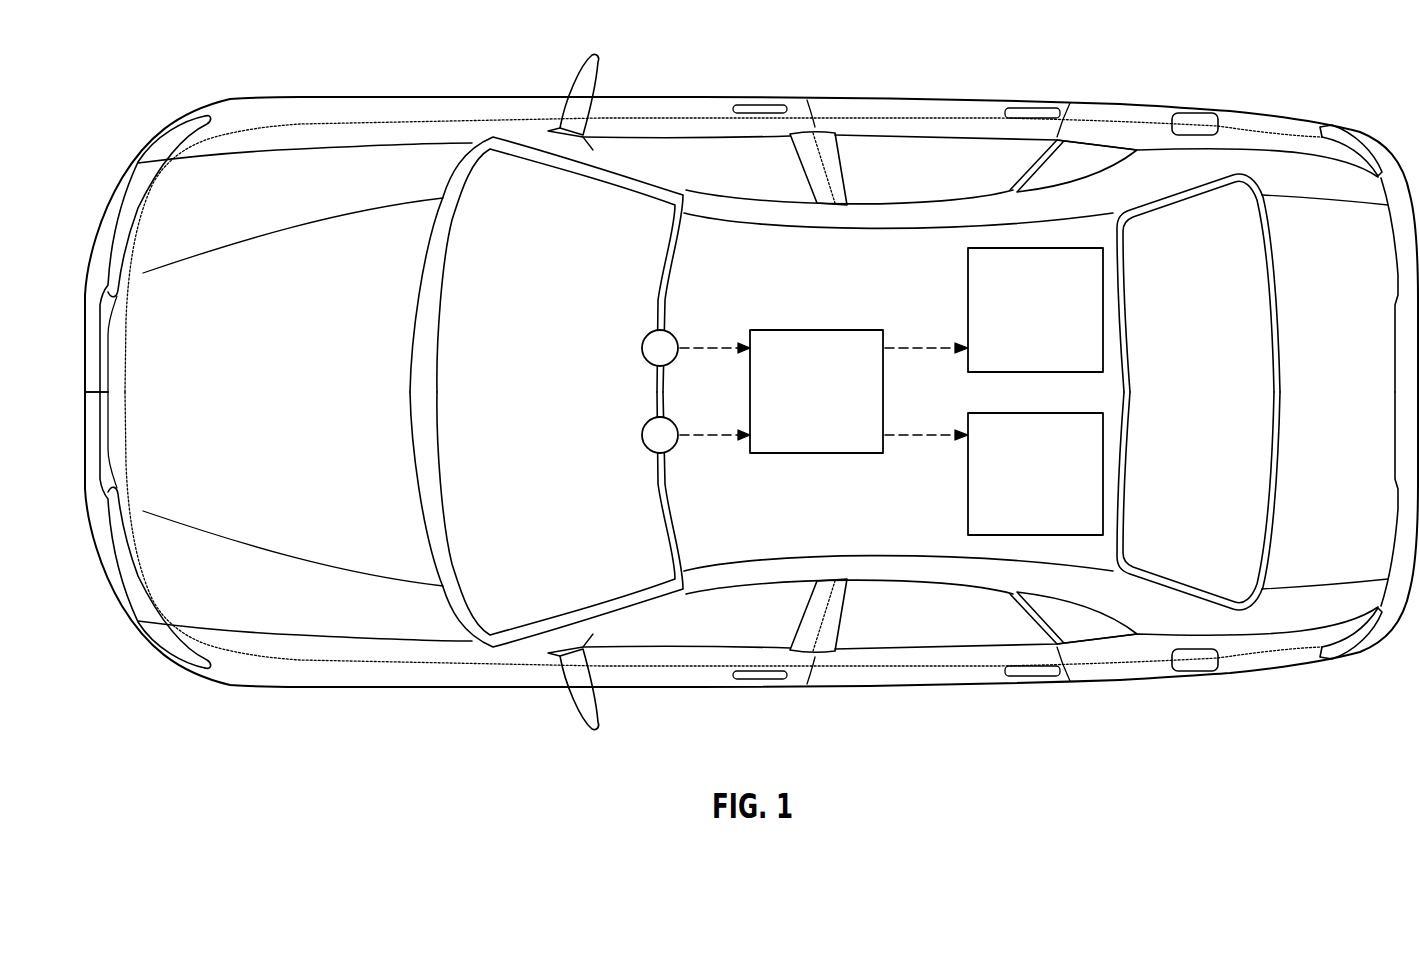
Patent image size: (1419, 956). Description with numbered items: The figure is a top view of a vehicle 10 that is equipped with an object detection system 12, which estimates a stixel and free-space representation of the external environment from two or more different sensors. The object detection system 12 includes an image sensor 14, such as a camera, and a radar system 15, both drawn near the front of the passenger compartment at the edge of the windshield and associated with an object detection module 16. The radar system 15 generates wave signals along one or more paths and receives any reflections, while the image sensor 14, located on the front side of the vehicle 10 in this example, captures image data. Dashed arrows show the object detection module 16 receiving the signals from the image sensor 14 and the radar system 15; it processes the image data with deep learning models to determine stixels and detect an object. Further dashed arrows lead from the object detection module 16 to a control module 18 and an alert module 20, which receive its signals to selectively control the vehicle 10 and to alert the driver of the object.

The vehicle 10 is at (381, 96).
The object detection system 12 is at (862, 303).
The image sensor 14 is at (641, 351).
The radar system 15 is at (641, 438).
The object detection module 16 is at (830, 405).
The control module 18 is at (1050, 324).
The alert module 20 is at (1050, 490).